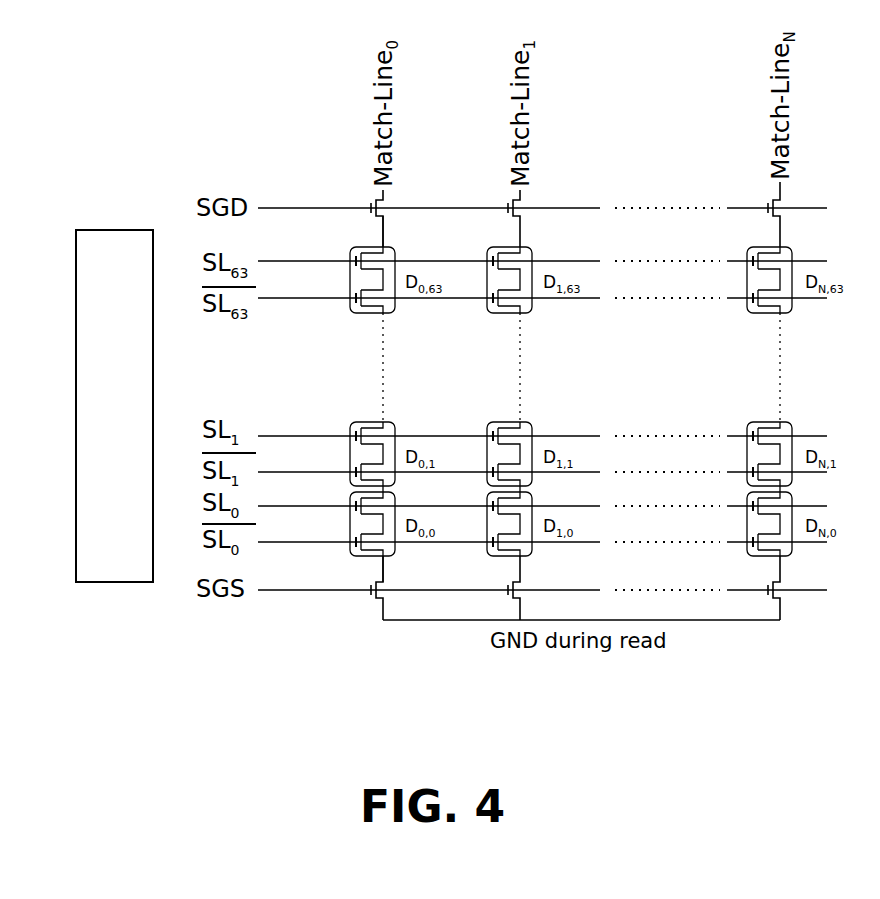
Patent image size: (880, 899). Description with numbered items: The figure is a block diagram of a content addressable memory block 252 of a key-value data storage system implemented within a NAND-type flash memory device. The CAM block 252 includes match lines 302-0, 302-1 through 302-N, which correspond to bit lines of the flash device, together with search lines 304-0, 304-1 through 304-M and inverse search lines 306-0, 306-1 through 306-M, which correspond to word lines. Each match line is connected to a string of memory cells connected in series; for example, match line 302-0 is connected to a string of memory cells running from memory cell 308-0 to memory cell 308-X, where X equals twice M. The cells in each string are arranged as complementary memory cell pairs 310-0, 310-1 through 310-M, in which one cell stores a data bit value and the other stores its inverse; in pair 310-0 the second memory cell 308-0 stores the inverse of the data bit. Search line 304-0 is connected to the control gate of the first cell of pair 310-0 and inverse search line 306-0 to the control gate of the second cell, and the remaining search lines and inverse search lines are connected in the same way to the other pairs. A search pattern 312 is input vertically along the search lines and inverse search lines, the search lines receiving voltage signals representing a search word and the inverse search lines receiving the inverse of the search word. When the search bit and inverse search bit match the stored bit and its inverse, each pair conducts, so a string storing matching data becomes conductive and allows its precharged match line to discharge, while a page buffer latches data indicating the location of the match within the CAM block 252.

The CAM block 252 is at (78, 101).
The search pattern 312 is at (78, 230).
The match line 302-0 is at (379, 192).
The match line 302-1 is at (516, 192).
The match line 302-N is at (776, 197).
The search line 304-M is at (341, 259).
The inverse search line 306-M is at (341, 297).
The search line 304-1 is at (341, 435).
The inverse search line 306-1 is at (341, 471).
The search line 304-0 is at (341, 505).
The inverse search line 306-0 is at (341, 541).
The memory cell 308-X is at (384, 246).
The memory cell 308-0 is at (389, 553).
The complementary memory cell pair 310-M is at (389, 314).
The complementary memory cell pair 310-1 is at (389, 421).
The complementary memory cell pair 310-0 is at (390, 506).